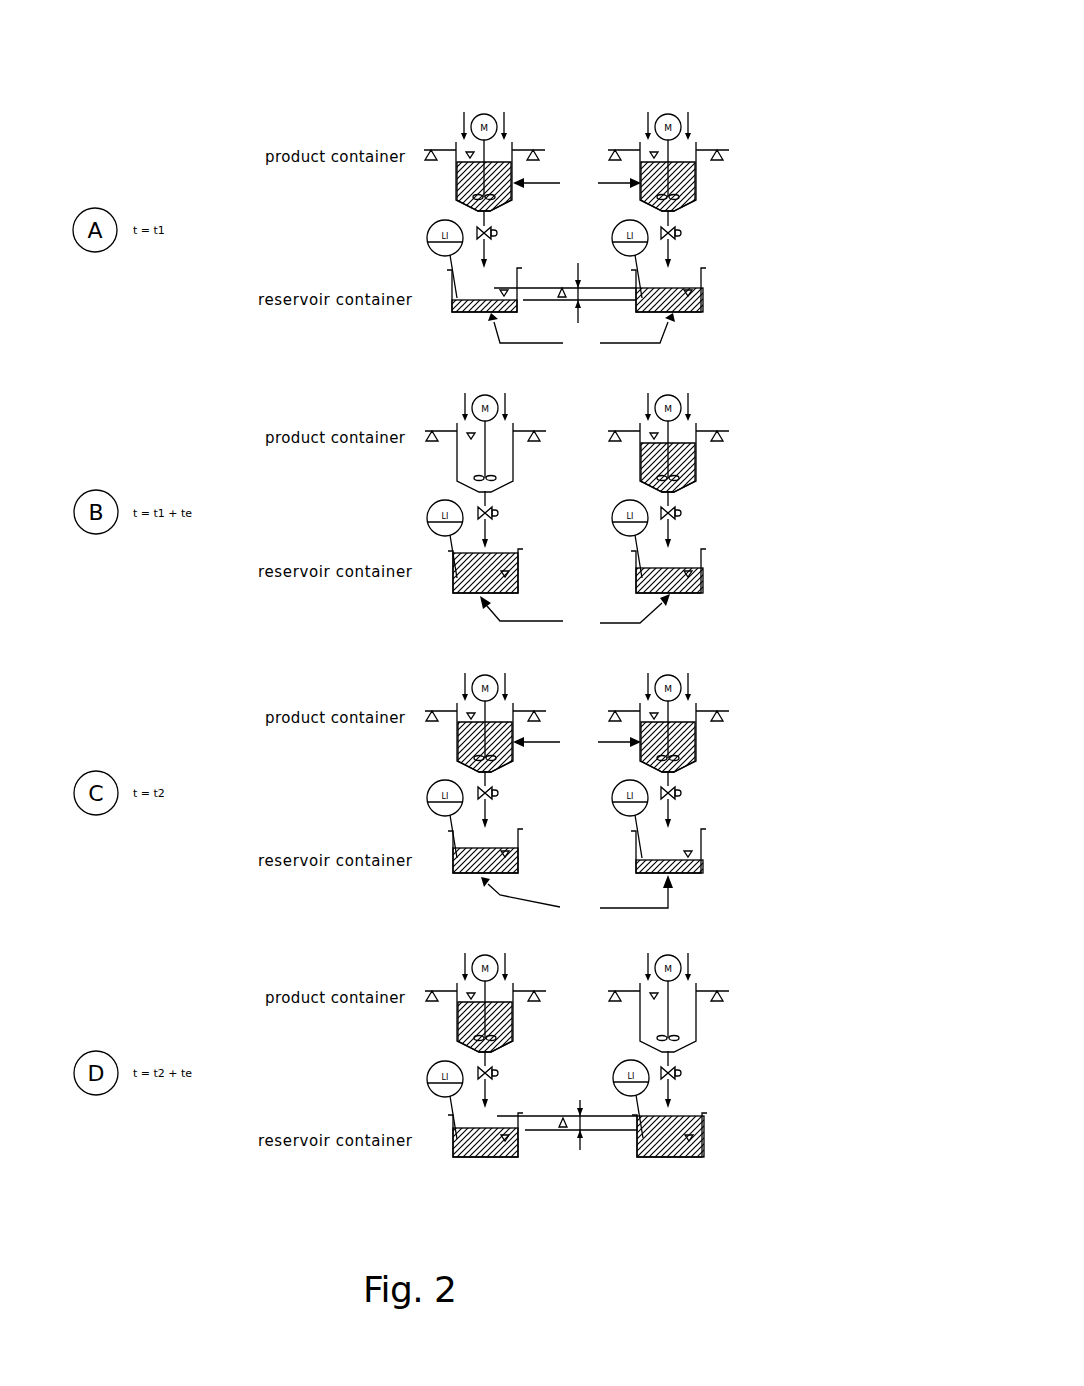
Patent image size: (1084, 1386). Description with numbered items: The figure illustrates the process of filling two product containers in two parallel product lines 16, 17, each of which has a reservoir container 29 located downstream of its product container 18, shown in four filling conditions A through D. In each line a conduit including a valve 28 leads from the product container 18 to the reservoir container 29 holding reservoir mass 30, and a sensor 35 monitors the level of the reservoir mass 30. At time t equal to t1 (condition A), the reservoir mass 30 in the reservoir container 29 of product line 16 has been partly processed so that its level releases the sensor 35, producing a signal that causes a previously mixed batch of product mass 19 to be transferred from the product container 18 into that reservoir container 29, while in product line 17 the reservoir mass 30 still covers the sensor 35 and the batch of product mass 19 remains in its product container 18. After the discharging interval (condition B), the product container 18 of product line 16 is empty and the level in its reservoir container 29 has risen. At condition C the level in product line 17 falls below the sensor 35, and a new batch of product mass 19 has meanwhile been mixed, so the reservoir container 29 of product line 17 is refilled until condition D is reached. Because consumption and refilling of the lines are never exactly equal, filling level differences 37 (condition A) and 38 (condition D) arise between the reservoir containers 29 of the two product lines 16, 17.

The product line 16 is at (481, 522).
The product line 17 is at (668, 522).
The product container 18 is at (577, 462).
The product mass 19 is at (458, 166).
The valve 28 is at (480, 232).
The reservoir container 29 is at (577, 615).
The reservoir mass 30 is at (455, 308).
The sensor 35 is at (430, 250).
The filling level difference 37 is at (569, 294).
The filling level difference 38 is at (576, 1124).